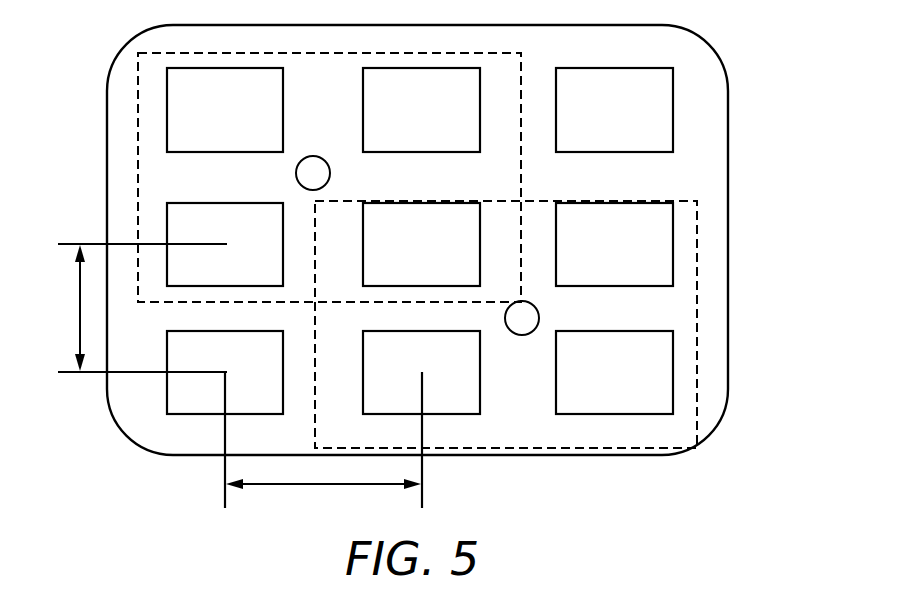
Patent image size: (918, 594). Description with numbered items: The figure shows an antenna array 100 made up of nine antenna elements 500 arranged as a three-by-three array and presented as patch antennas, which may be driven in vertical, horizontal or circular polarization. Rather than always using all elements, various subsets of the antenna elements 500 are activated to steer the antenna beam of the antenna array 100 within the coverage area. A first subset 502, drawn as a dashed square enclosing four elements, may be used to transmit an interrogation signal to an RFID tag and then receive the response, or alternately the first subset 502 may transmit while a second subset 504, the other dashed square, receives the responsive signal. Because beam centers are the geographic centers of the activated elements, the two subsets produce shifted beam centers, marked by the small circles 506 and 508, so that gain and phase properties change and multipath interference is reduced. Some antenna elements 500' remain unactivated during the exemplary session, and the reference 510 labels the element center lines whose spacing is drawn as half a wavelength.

The antenna array 100 is at (788, 118).
The antenna elements 500 is at (361, 241).
The antenna elements (not activated) 500' is at (626, 97).
The first subset 502 is at (138, 178).
The second subset 504 is at (697, 302).
The phase center of first subarray 506 is at (313, 156).
The phase center of second subarray 508 is at (522, 335).
The center line spacing 510 is at (74, 388).